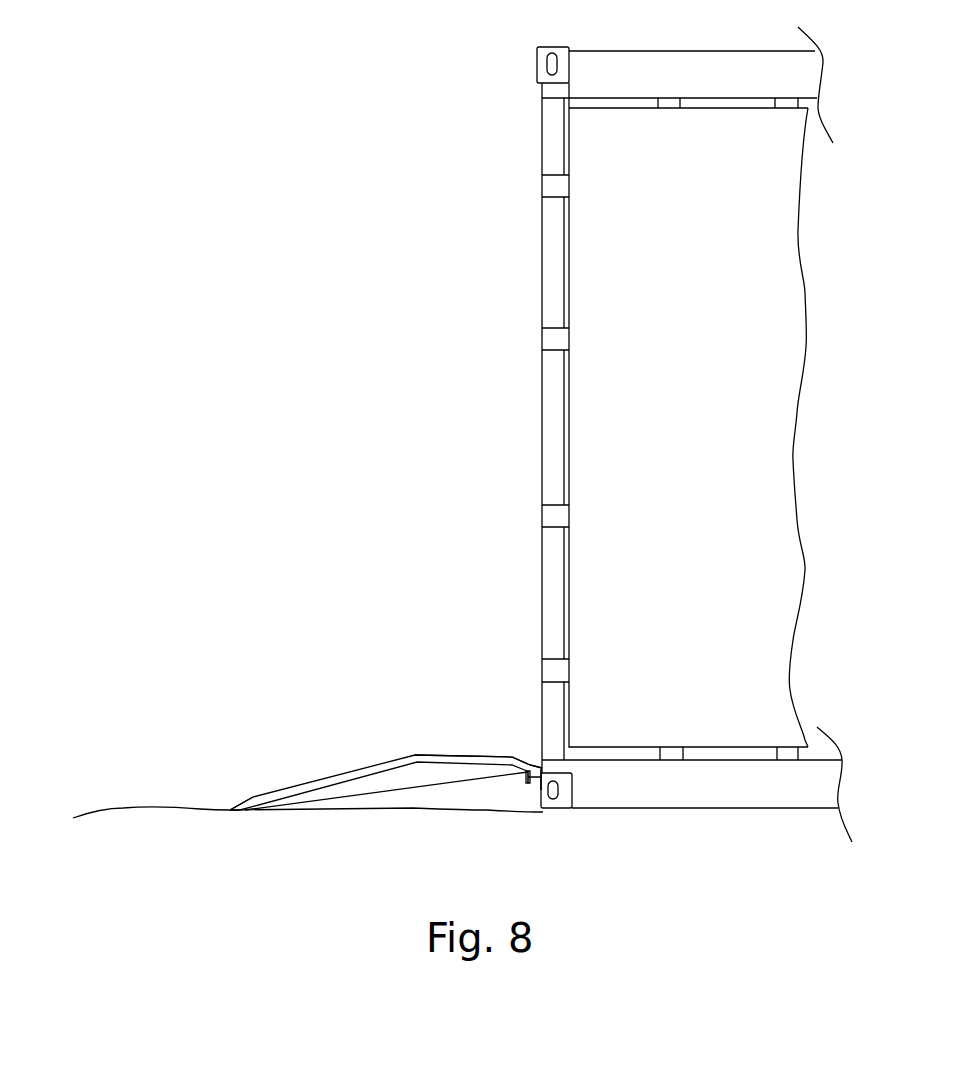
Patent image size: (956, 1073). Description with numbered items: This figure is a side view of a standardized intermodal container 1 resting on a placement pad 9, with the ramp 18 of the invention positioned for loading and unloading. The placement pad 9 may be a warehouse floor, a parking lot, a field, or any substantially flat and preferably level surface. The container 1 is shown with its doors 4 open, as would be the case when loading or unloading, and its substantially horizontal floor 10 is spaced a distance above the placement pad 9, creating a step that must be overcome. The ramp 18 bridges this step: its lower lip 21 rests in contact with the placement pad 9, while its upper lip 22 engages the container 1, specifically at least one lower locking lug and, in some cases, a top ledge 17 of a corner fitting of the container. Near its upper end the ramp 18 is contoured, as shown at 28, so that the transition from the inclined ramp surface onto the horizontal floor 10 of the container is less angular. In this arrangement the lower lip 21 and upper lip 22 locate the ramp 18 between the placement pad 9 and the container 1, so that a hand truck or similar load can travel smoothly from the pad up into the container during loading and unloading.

The container 1 is at (480, 182).
The doors 4 is at (683, 515).
The placement pad 9 is at (152, 803).
The floor 10 is at (620, 761).
The top ledge 17 is at (557, 771).
The ramp 18 is at (288, 728).
The lower lip 21 is at (240, 821).
The upper lip 22 is at (523, 748).
The contour 28 is at (416, 750).